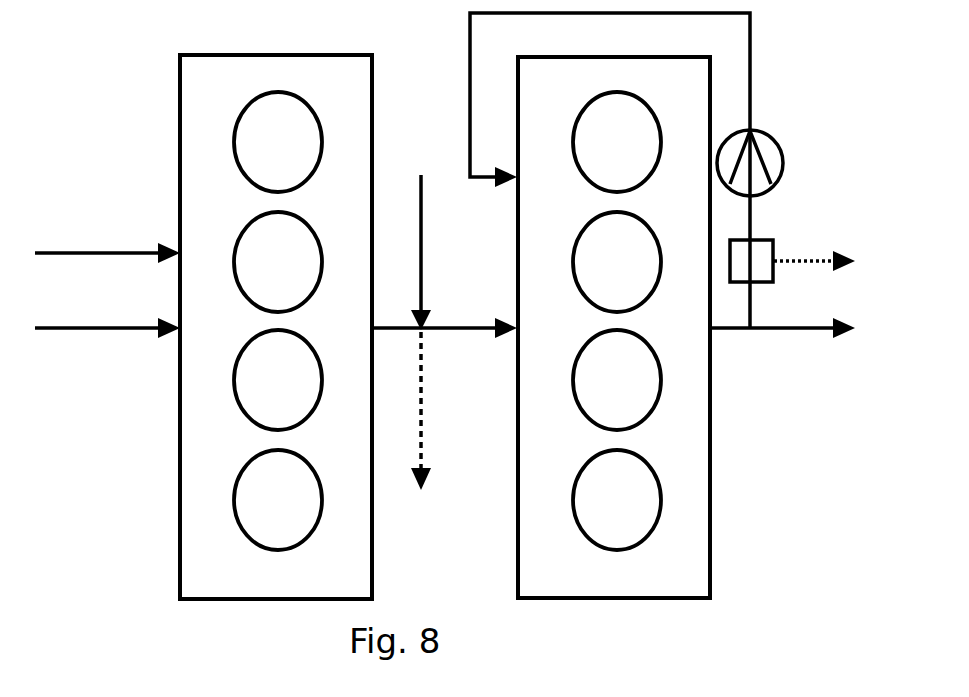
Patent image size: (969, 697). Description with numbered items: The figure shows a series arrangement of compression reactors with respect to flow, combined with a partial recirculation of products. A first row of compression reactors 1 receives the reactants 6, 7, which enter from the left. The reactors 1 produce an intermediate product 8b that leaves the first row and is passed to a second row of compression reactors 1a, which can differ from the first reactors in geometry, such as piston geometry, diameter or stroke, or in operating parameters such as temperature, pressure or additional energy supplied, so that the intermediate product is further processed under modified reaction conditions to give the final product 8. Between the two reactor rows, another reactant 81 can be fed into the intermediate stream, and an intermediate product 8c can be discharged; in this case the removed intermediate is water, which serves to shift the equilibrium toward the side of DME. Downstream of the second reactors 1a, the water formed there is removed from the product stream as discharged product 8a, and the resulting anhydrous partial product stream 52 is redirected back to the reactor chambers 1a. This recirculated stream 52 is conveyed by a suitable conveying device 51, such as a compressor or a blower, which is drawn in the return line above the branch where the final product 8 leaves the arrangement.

The compression reactor 1 is at (278, 321).
The compression reactor 1a is at (617, 321).
The reactant 6 is at (107, 238).
The reactant 7 is at (107, 313).
The product stream 8 is at (782, 311).
The discharged product 8a is at (821, 245).
The intermediate product 8b is at (444, 316).
The intermediate product 8c is at (421, 431).
The reactant 81 is at (410, 225).
The conveying device 51 is at (777, 163).
The partial product stream 52 is at (637, 170).